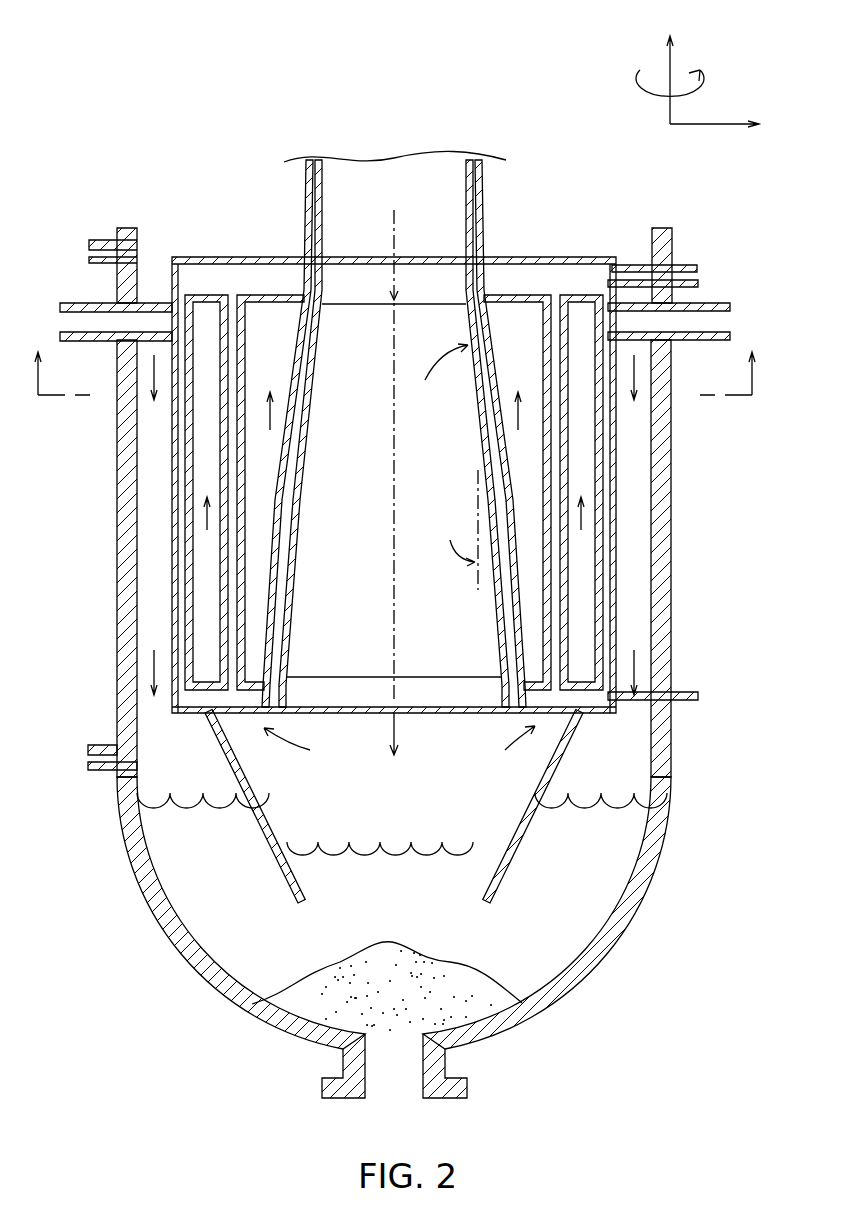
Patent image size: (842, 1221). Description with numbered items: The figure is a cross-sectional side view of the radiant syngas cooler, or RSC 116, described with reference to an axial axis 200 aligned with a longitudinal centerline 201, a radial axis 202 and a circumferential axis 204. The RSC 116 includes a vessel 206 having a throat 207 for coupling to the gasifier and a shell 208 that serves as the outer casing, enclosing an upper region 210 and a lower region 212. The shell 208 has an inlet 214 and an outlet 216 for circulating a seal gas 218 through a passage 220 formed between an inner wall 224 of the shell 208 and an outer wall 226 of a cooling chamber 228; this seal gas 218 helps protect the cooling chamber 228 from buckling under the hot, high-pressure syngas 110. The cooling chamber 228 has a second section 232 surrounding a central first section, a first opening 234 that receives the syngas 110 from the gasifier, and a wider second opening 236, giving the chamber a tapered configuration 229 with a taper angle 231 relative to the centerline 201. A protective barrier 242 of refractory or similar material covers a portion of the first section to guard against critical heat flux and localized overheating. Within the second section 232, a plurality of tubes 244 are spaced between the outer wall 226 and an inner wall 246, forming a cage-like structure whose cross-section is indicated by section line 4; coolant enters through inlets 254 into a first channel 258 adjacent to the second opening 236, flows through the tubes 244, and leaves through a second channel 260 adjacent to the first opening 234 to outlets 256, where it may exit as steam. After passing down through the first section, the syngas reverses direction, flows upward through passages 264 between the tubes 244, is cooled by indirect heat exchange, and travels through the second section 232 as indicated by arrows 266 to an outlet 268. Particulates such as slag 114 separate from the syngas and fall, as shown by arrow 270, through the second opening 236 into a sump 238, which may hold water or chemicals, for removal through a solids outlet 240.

The section line 4 is at (393, 359).
The syngas 110 is at (396, 225).
The slag 114 is at (405, 960).
The RSC 116 is at (106, 127).
The axial direction or axis 200 is at (675, 66).
The longitudinal centerline 201 is at (396, 470).
The radial direction or axis 202 is at (705, 125).
The circumferential direction or axis 204 is at (642, 102).
The vessel 206 is at (117, 430).
The throat 207 is at (485, 200).
The shell 208 is at (175, 575).
The upper region 210 is at (419, 655).
The lower region 212 is at (709, 814).
The inlet 214 is at (112, 240).
The outlet 216 is at (88, 770).
The seal gas 218 is at (150, 378).
The passage 220 is at (155, 625).
The inner wall 224 is at (190, 530).
The outer wall 226 is at (180, 455).
The cooling chamber 228 is at (332, 113).
The tapered configuration 229 is at (440, 373).
The taper angle 231 is at (454, 530).
The second section 232 is at (212, 257).
The first opening 234 is at (360, 255).
The second opening 236 is at (422, 715).
The sump 238 is at (535, 815).
The solids outlet 240 is at (345, 1098).
The protective barrier 242 is at (313, 370).
The plurality of tubes 244 is at (188, 490).
The inner wall 246 is at (300, 495).
The inlets 254 is at (700, 696).
The outlets 256 is at (690, 266).
The first channel 258 is at (595, 713).
The second channel 260 is at (258, 280).
The passages 264 is at (200, 700).
The arrows 266 is at (310, 750).
The outlet 268 is at (70, 303).
The arrow 270 is at (392, 732).